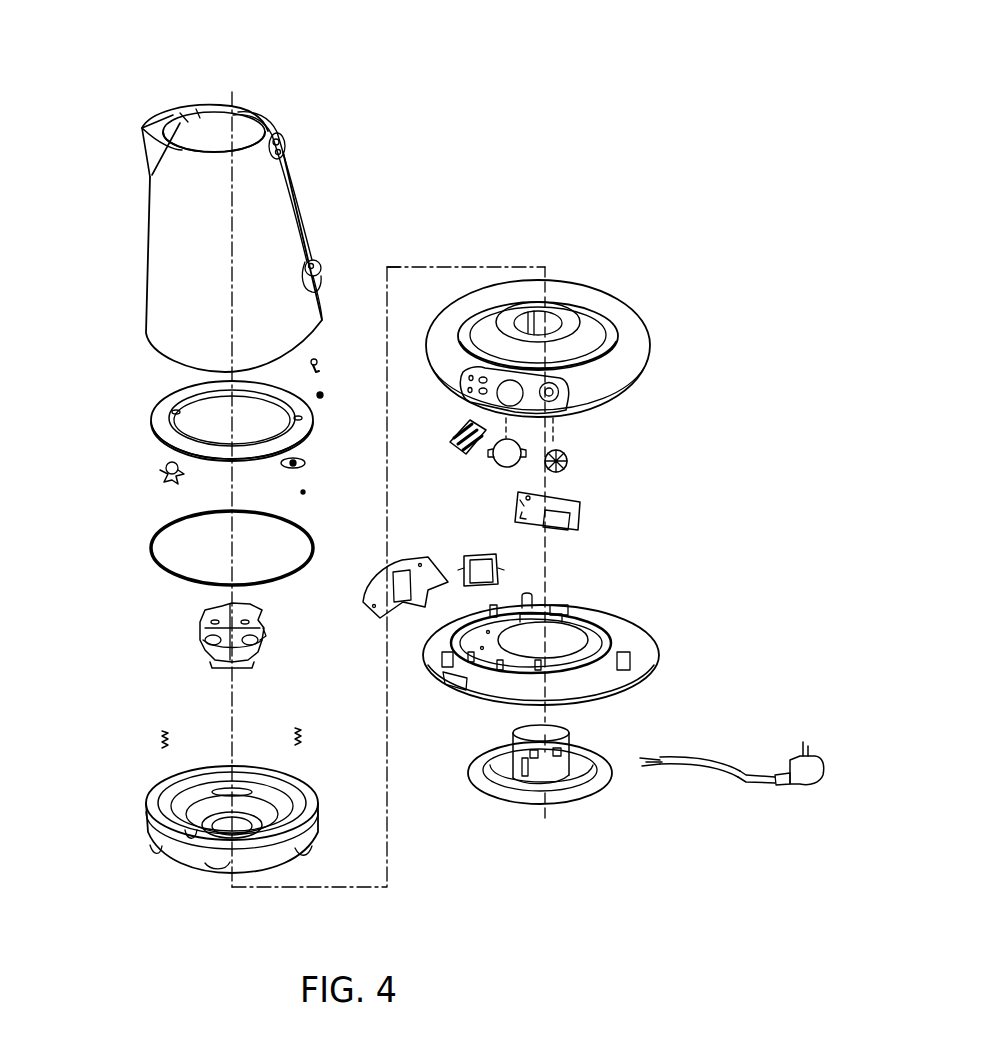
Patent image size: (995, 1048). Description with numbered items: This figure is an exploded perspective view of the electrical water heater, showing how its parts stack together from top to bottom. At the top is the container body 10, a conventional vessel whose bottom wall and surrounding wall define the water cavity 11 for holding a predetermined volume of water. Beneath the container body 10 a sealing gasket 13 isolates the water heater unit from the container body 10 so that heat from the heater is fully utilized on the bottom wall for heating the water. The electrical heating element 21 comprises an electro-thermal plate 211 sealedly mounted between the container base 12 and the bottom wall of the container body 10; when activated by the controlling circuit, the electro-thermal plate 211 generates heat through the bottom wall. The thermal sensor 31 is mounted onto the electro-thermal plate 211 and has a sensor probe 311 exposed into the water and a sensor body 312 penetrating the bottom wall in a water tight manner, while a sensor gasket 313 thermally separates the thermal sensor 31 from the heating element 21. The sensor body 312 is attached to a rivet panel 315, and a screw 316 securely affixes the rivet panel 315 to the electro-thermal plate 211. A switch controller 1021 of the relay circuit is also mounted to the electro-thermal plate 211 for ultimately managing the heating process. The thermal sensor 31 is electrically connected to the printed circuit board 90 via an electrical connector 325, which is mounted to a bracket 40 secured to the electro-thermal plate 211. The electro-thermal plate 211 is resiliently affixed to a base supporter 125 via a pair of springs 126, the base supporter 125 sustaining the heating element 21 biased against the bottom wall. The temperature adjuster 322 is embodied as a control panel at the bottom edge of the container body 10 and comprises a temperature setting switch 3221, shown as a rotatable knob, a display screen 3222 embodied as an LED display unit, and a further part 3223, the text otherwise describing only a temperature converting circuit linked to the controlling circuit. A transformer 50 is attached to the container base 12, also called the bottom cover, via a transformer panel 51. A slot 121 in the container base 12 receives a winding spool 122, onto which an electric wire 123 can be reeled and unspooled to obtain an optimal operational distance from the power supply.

The container body 10 is at (423, 110).
The water cavity 11 is at (213, 133).
The sealing gasket 13 is at (285, 230).
The electrical heating element 21 is at (87, 316).
The electro-thermal plate 211 is at (175, 407).
The thermal sensor 31 is at (389, 282).
The sensor probe 311 is at (316, 363).
The sensor body 312 is at (318, 368).
The sensor gasket 313 is at (324, 394).
The rivet panel 315 is at (300, 460).
The screw 316 is at (306, 492).
The switch controller 1021 is at (162, 476).
The electrical connector 325 is at (197, 627).
The bracket 40 is at (263, 635).
The springs 126 is at (157, 737).
The base supporter 125 is at (185, 853).
The temperature adjuster 322 is at (567, 403).
The bracket 3223 is at (475, 418).
The display screen 3222 is at (498, 463).
The temperature setting switch 3221 is at (569, 455).
The printed circuit board 90 is at (575, 513).
The transformer 50 is at (498, 572).
The transformer panel 51 is at (405, 608).
The container base 12 is at (635, 642).
The slot 121 is at (543, 641).
The winding spool 122 is at (548, 795).
The electric wire 123 is at (727, 772).